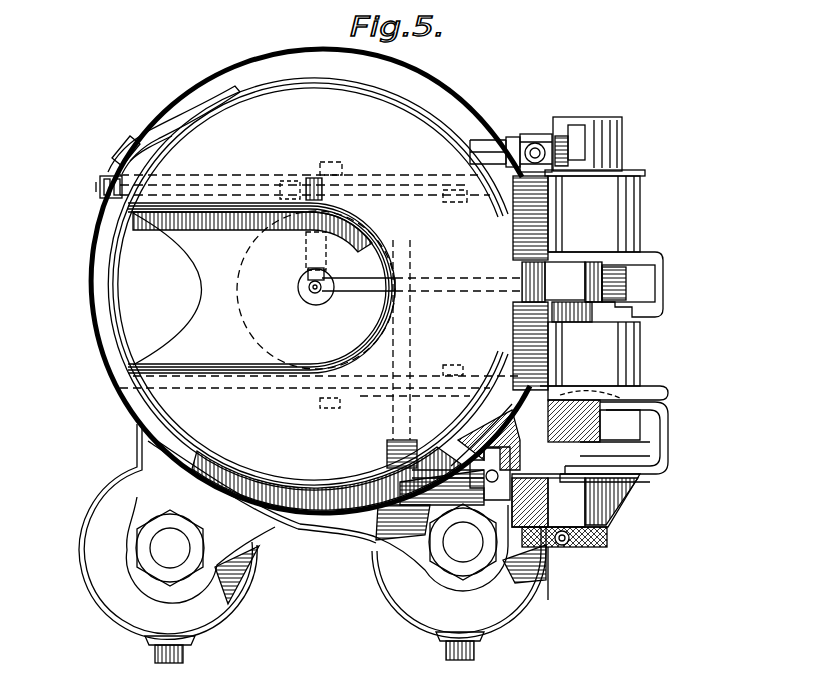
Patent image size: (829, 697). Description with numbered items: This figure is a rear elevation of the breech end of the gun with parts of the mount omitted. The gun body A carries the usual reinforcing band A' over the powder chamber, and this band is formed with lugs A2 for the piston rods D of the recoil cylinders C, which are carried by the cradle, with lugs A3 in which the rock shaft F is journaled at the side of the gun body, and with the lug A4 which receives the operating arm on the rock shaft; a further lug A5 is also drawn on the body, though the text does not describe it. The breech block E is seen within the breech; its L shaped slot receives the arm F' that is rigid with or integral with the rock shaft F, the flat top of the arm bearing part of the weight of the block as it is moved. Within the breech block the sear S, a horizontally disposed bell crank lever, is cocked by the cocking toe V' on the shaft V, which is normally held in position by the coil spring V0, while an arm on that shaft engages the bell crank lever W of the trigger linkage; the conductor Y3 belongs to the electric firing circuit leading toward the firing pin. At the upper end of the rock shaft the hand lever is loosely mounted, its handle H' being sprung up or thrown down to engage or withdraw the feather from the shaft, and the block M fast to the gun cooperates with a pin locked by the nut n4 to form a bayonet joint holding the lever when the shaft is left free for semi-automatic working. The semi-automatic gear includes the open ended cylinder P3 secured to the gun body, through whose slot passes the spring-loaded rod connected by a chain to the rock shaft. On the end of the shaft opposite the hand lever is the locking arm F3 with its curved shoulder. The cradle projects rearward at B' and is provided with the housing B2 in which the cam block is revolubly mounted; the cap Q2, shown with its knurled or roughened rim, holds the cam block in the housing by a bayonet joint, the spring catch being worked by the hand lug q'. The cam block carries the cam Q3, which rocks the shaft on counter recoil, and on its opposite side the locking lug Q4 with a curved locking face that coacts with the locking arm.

The reinforcing band A' is at (284, 281).
The gun body A is at (308, 284).
The lugs A2 is at (352, 531).
The lugs A3 is at (640, 214).
The lug A4 is at (653, 305).
The flange A5 is at (657, 394).
The conductor Y3 is at (124, 150).
The breech block E is at (194, 289).
The cocking toe V' is at (349, 290).
The shaft V is at (320, 340).
The coil spring V0 is at (387, 438).
The sear S is at (363, 289).
The bell crank lever W is at (448, 440).
The block M is at (486, 140).
The handle H' is at (529, 128).
The nut n4 is at (560, 138).
The rock shaft F is at (591, 220).
The arm F' is at (563, 271).
The locking arm F3 is at (612, 420).
The open ended cylinder P3 is at (547, 388).
The locking lug Q4 is at (598, 452).
The cap Q2 is at (607, 547).
The cam Q3 is at (566, 583).
The hand lug q' is at (587, 563).
The rearward projection of cradle B' is at (630, 479).
The housing B2 is at (603, 520).
The recoil cylinder C is at (210, 603).
The piston rod D is at (316, 545).